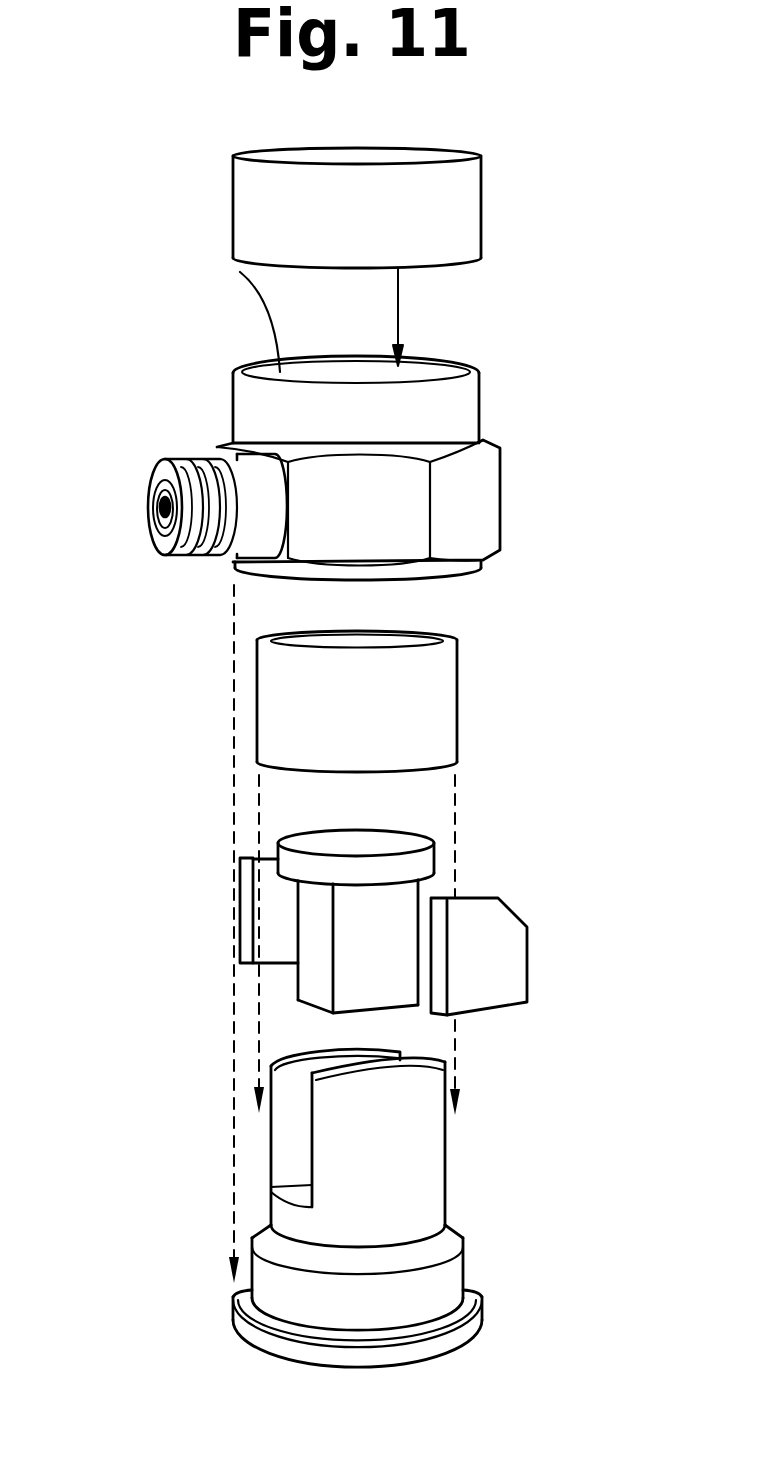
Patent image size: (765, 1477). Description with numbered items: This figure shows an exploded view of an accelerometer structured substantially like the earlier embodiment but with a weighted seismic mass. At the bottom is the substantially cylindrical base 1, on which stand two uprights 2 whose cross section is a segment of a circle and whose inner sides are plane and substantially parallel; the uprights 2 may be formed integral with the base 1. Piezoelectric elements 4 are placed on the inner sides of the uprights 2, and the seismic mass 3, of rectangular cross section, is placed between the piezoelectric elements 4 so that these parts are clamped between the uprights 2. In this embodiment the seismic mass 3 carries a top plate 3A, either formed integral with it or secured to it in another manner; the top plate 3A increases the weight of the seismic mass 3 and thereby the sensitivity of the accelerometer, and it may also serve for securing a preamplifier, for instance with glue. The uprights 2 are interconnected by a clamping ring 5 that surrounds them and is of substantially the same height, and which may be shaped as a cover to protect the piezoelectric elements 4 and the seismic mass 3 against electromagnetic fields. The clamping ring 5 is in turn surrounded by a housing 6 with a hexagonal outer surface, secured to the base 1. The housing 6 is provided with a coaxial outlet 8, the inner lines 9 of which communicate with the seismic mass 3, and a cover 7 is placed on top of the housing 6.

The base 1 is at (233, 1318).
The uprights 2 is at (270, 1113).
The seismic mass 3 is at (305, 973).
The top plate 3A is at (433, 840).
The piezoelectric elements 4 is at (240, 872).
The clamping ring 5 is at (264, 712).
The housing 6 is at (243, 407).
The cover 7 is at (242, 187).
The coaxial outlet 8 is at (157, 535).
The inner lines 9 is at (274, 333).